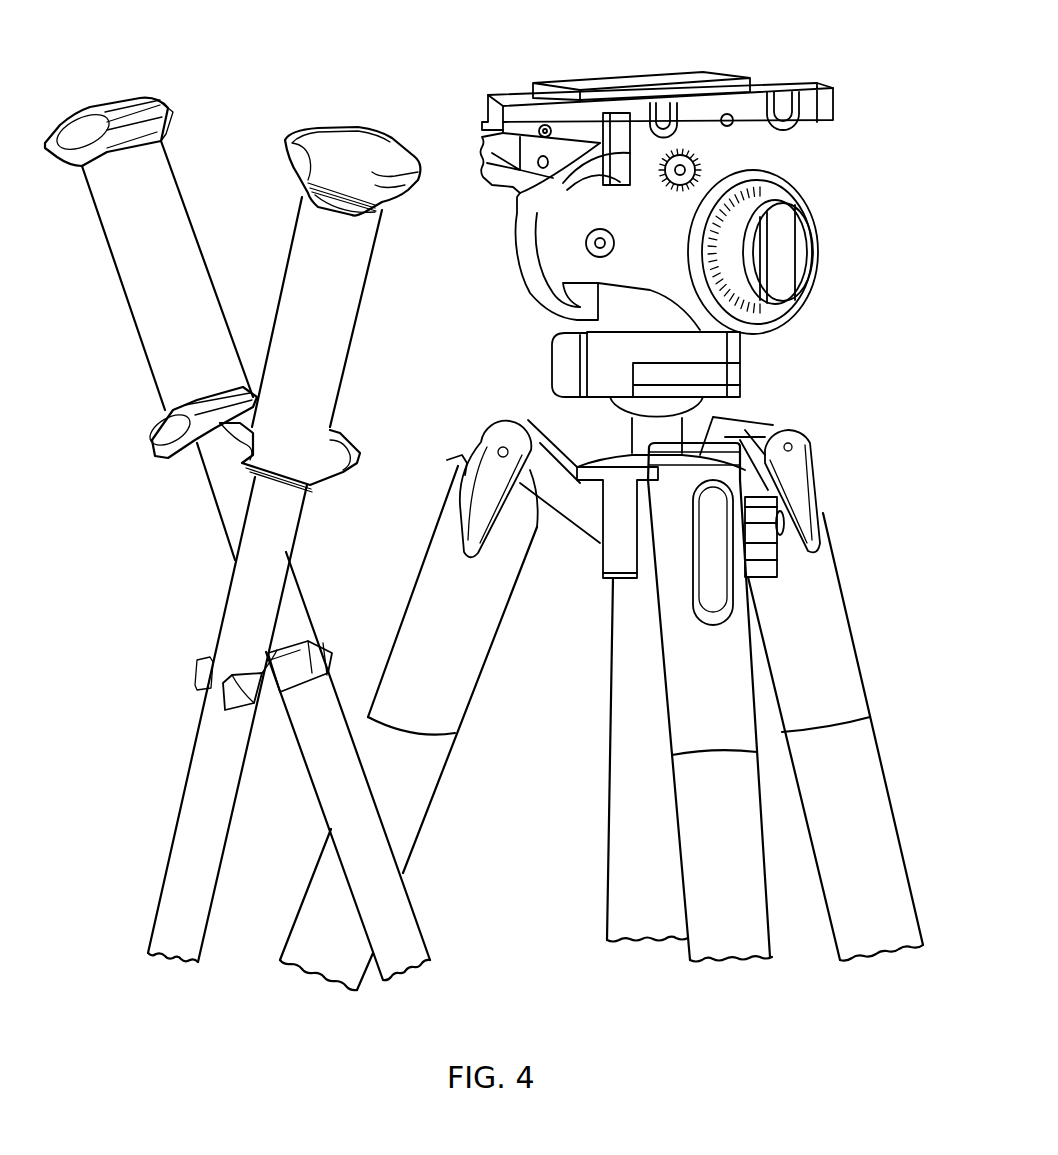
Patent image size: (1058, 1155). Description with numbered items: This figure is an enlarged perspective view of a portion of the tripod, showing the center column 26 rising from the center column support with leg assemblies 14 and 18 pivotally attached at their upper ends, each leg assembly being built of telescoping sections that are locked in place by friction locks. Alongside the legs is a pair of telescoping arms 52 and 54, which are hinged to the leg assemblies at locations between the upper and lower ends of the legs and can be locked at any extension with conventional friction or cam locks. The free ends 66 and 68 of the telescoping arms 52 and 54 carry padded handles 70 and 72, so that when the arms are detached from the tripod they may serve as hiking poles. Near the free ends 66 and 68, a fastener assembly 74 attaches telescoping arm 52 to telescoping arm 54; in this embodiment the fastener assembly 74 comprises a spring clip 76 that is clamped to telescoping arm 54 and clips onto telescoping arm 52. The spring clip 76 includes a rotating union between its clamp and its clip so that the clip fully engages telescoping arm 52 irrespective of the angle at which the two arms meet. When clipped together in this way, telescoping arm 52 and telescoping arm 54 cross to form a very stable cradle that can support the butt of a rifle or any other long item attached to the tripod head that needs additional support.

The leg assembly 14 is at (458, 673).
The leg assembly 18 is at (868, 800).
The center column 26 is at (617, 795).
The telescoping arm 52 is at (177, 898).
The telescoping arm 54 is at (395, 912).
The free end 66 is at (373, 277).
The free end 68 is at (175, 175).
The padded handle 70 is at (352, 147).
The padded handle 72 is at (102, 110).
The fastener assembly 74 is at (330, 647).
The spring clip 76 is at (242, 698).